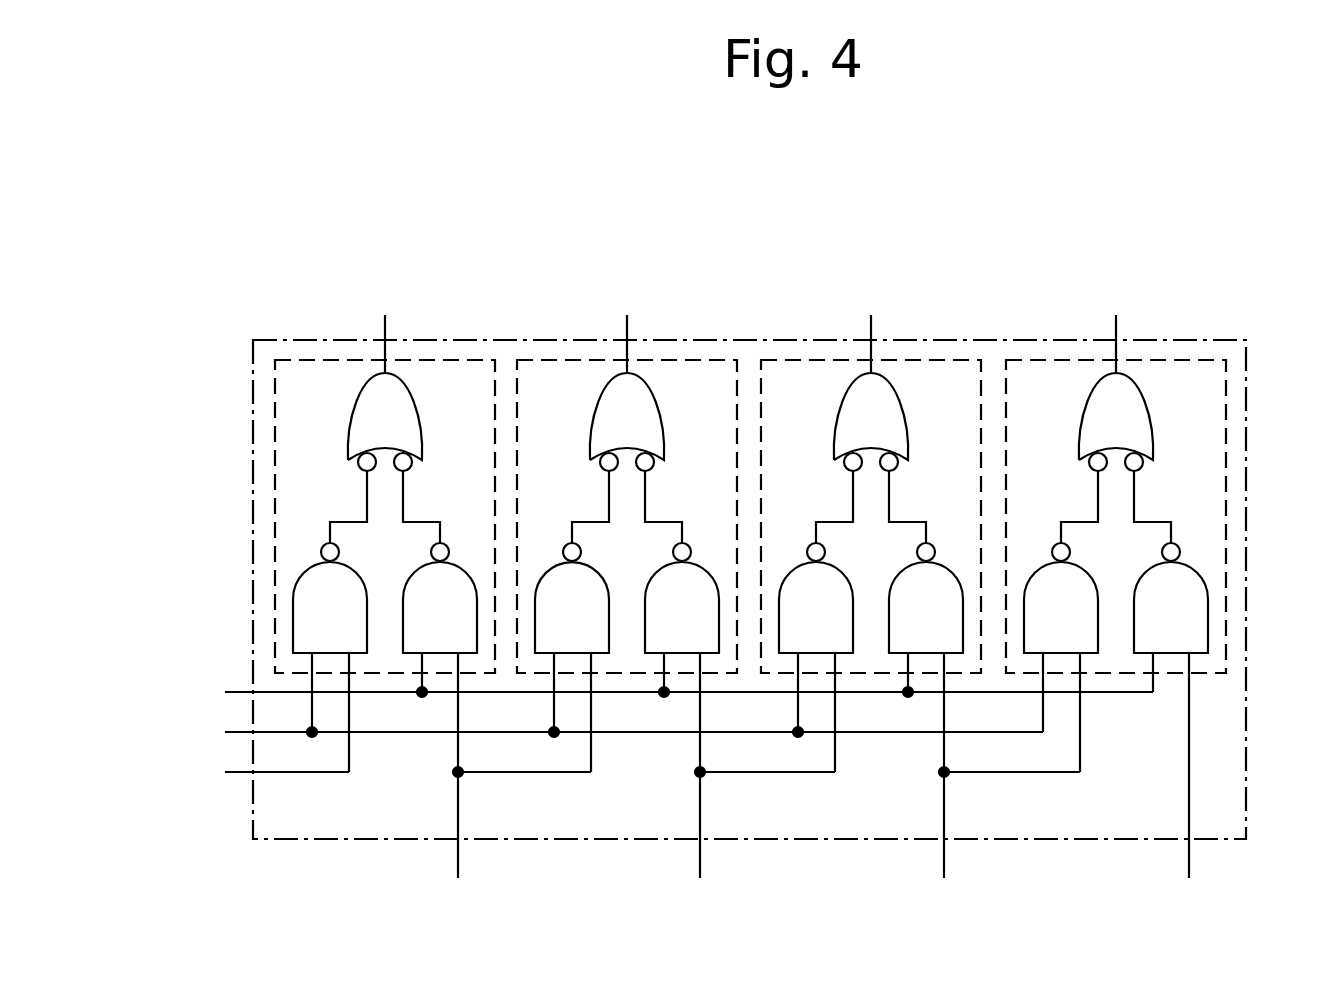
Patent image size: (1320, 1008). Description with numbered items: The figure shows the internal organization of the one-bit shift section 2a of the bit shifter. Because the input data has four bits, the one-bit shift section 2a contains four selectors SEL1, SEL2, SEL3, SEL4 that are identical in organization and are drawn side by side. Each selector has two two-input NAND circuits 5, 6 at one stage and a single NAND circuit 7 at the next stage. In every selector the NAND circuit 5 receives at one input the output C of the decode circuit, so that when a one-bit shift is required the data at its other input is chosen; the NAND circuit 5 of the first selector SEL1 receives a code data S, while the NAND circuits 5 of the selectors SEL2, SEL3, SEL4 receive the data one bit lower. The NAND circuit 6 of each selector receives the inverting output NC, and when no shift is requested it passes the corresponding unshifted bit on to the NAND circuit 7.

The 1-bit shift section 2a is at (279, 338).
The NAND circuit 5 is at (306, 563).
The NAND circuit 6 is at (472, 568).
The NAND circuit 7 is at (417, 412).
The selector SEL1 is at (447, 355).
The selector SEL2 is at (683, 357).
The selector SEL3 is at (928, 357).
The selector SEL4 is at (1173, 357).